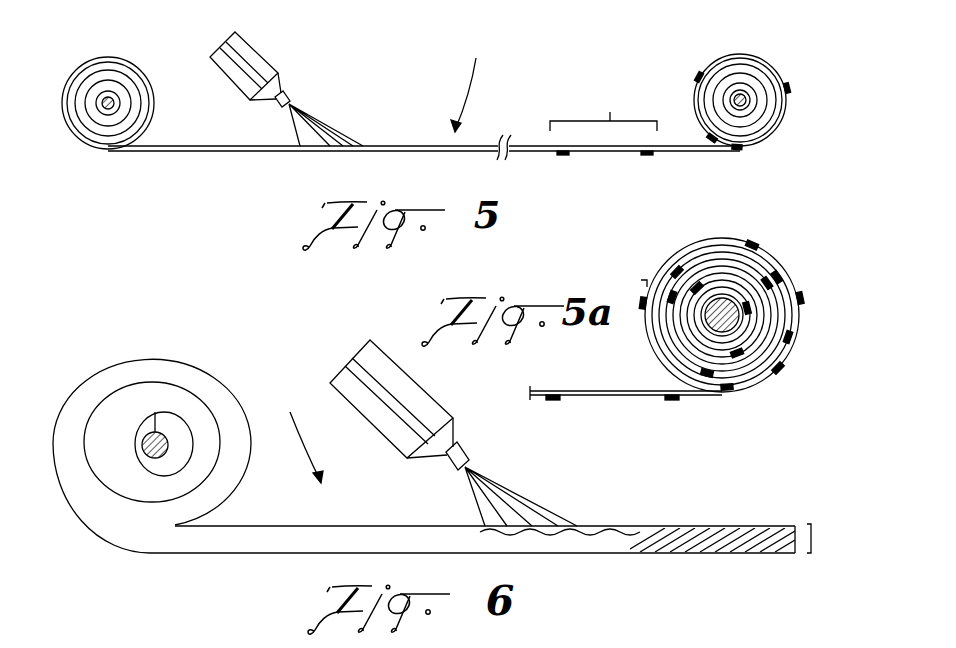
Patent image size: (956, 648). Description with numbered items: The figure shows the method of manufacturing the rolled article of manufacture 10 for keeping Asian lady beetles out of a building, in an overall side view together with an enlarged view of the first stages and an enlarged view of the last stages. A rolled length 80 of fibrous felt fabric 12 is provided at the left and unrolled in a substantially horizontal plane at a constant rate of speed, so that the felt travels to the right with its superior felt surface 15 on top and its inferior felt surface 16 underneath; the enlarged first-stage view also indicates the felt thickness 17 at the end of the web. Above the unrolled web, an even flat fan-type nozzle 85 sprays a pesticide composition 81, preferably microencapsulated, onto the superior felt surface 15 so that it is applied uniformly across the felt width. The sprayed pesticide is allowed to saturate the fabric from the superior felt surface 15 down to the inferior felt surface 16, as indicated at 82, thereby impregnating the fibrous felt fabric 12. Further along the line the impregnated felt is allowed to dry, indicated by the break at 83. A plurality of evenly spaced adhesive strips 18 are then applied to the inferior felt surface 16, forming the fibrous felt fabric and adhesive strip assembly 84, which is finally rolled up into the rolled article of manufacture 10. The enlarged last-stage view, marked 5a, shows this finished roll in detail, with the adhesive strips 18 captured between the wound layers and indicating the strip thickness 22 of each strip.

In FIG. 5, the rolled article of manufacture 10 is at (735, 55).
In FIG. 5A, the rolled article of manufacture 10 is at (800, 305).
In FIG. 5, the fibrous felt fabric 12 is at (470, 82).
In FIG. 6, the fibrous felt fabric 12 is at (297, 435).
In FIG. 5, the superior felt surface 15 is at (200, 146).
In FIG. 6, the superior felt surface 15 is at (282, 525).
In FIG. 5, the inferior felt surface 16 is at (160, 152).
In FIG. 6, the inferior felt surface 16 is at (250, 556).
In FIG. 6, the felt thickness 17 is at (812, 540).
In FIG. 5, the adhesive strips 18 is at (735, 152).
In FIG. 5A, the adhesive strips 18 is at (754, 245).
In FIG. 5A, the strip thickness 22 is at (645, 282).
In FIG. 5, the rolled length of fibrous felt fabric 80 is at (105, 95).
In FIG. 6, the rolled length of fibrous felt fabric 80 is at (118, 427).
In FIG. 5, the pesticide composition 81 is at (340, 127).
In FIG. 6, the pesticide composition 81 is at (510, 507).
In FIG. 6, the pesticide saturation of the felt fabric 82 is at (625, 535).
In FIG. 5, the drying step 83 is at (505, 138).
In FIG. 5, the fibrous felt fabric and adhesive strip assembly 84 is at (603, 109).
In FIG. 5, the even flat fan-type nozzle 85 is at (290, 98).
In FIG. 6, the even flat fan-type nozzle 85 is at (447, 462).
In FIG. 5, the callout to FIG. 5A 5a is at (705, 68).